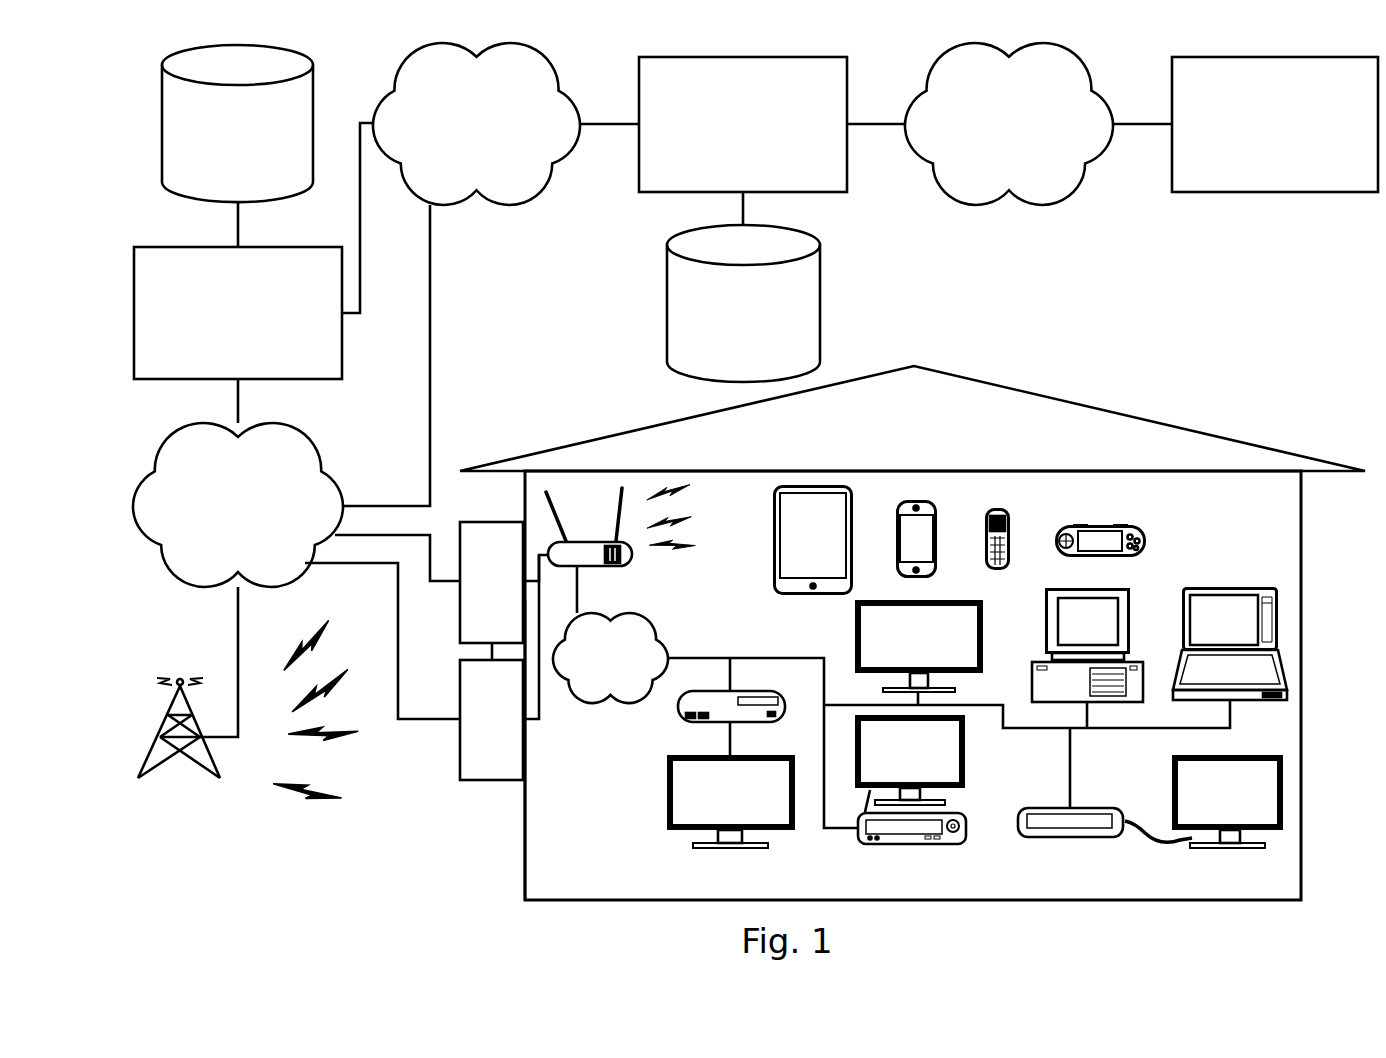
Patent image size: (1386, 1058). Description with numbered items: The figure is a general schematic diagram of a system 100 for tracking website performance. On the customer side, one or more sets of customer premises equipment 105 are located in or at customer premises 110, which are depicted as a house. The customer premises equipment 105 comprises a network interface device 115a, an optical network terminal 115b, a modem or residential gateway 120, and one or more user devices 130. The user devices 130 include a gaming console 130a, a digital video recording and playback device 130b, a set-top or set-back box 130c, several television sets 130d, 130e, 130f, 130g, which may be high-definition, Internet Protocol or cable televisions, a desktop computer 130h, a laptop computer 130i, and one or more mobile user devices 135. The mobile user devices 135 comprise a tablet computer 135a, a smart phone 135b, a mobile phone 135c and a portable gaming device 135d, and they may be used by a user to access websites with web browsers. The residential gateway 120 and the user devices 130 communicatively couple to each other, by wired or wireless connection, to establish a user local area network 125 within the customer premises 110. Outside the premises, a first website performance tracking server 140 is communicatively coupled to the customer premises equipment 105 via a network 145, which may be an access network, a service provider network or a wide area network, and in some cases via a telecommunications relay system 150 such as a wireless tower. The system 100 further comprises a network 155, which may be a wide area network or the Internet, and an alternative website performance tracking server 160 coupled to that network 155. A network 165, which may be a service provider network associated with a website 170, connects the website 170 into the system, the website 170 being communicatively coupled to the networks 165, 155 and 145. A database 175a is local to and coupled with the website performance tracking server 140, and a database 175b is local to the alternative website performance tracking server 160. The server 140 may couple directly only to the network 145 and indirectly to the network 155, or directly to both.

The system 100 is at (262, 880).
The customer premises equipment 105 is at (1319, 877).
The customer premises 110 is at (525, 848).
The network interface device 115a is at (460, 612).
The optical network terminal 115b is at (460, 748).
The residential gateway 120 is at (607, 566).
The user local area network 125 is at (582, 700).
The user devices 130 is at (1290, 856).
The gaming console 130a is at (677, 698).
The digital video recording and playback device 130b is at (862, 845).
The set-top box 130c is at (1017, 815).
The television set 130d is at (667, 805).
The television set 130e is at (965, 740).
The television set 130f is at (983, 655).
The television set 130g is at (1172, 765).
The desktop computer 130h is at (1143, 685).
The laptop computer 130i is at (1272, 700).
The mobile user devices 135 is at (758, 485).
The tablet computer 135a is at (853, 548).
The smart phone 135b is at (937, 548).
The mobile phone 135c is at (1010, 545).
The portable gaming device 135d is at (1147, 540).
The website performance tracking server 140 is at (134, 348).
The network 145 is at (175, 565).
The telecommunications relay system 150 is at (150, 752).
The network 155 is at (408, 182).
The alternative website performance tracking server 160 is at (639, 160).
The network 165 is at (935, 177).
The website 170 is at (1172, 157).
The database 175a is at (162, 157).
The database 175b is at (667, 342).